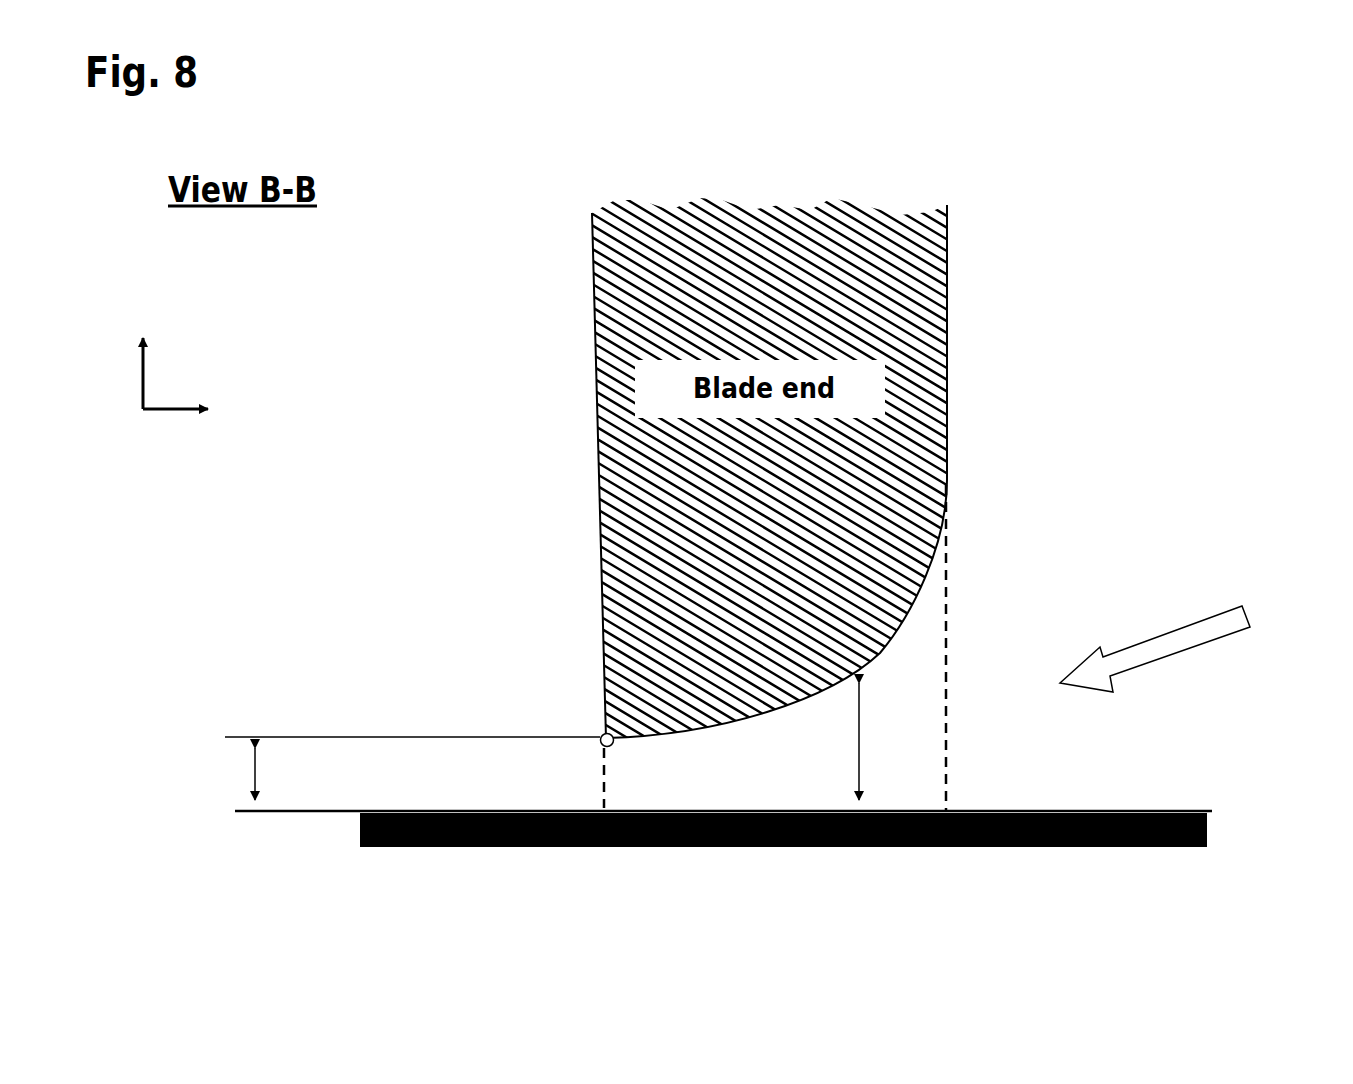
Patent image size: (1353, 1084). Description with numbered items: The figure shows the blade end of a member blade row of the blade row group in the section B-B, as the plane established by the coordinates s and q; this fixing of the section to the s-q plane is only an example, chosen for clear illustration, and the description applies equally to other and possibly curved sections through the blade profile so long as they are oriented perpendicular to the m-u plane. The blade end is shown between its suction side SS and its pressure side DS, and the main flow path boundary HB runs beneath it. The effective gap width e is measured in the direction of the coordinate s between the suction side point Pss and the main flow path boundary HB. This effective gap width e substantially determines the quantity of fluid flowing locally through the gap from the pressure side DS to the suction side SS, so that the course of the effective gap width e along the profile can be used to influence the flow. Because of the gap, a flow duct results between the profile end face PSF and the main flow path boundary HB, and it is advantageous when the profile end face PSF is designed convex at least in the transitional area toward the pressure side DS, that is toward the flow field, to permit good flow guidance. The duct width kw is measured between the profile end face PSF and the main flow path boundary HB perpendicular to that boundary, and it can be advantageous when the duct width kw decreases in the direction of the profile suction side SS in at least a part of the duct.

The profile suction side SS is at (551, 475).
The pressure side DS is at (995, 342).
The profile end face PSF is at (912, 630).
The suction side point Pss is at (419, 709).
The duct width kw is at (828, 741).
The effective gap width e is at (227, 774).
The main flow path boundary HB is at (771, 836).
The coordinate s is at (129, 364).
The coordinate q is at (195, 412).